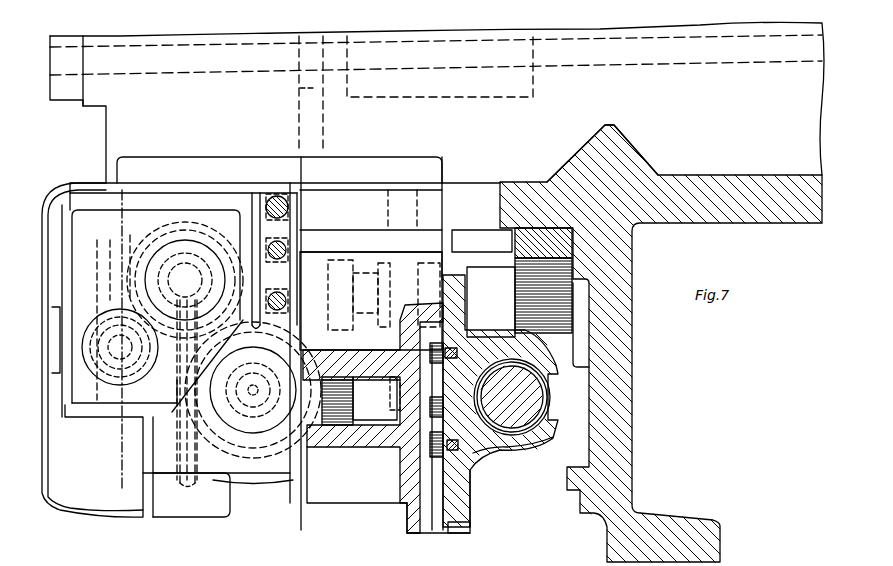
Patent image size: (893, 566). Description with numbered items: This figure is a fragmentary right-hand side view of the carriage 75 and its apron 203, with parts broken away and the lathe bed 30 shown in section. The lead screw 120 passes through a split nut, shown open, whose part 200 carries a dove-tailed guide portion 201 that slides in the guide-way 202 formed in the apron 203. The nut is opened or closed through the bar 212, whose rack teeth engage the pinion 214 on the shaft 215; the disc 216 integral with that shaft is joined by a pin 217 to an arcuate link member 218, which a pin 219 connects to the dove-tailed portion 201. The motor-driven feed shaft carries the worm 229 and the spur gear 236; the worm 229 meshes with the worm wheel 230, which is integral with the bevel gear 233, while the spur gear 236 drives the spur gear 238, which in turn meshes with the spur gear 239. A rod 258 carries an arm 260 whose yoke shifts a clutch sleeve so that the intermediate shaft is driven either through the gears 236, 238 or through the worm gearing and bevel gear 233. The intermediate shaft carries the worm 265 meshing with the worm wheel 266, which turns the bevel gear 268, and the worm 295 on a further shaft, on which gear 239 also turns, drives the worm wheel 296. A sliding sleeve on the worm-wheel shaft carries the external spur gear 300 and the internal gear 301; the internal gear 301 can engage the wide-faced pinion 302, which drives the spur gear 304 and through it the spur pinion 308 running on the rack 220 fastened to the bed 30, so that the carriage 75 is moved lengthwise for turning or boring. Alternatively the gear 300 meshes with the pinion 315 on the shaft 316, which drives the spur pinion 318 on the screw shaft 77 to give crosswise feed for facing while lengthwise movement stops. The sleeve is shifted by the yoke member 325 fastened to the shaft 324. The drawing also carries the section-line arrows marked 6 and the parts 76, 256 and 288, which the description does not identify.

The bed 30 is at (635, 481).
The carriage 75 is at (437, 102).
The chamfered projection 76 is at (622, 151).
The screw shaft 77 is at (692, 67).
The lead screw 120 is at (548, 391).
The split nut part 200 is at (473, 340).
The dove-tailed guide portion 201 is at (466, 284).
The slot or guide-way 202 is at (463, 531).
The apron 203 is at (375, 497).
The bar 212 is at (395, 330).
The pinion 214 is at (343, 446).
The shaft 215 is at (373, 434).
The disc 216 is at (397, 388).
The pin 217 is at (441, 412).
The arcuate link member 218 is at (433, 342).
The pin 219 is at (452, 352).
The rack 220 is at (513, 240).
The worm 229 is at (116, 354).
The worm wheel 230 is at (169, 350).
The bevel gear 233 is at (140, 243).
The spur gear 236 is at (177, 380).
The spur gear 238 is at (197, 390).
The spur gear 239 is at (268, 462).
The plate 256 is at (300, 252).
The rod 258 is at (277, 275).
The arm 260 is at (197, 233).
The worm 265 is at (185, 280).
The worm wheel 266 is at (183, 493).
The bevel gear 268 is at (213, 467).
The block 288 is at (310, 303).
The worm 295 is at (258, 401).
The worm wheel 296 is at (258, 203).
The external spur gear 300 is at (320, 225).
The internal gear 301 is at (365, 247).
The wide-faced spur pinion 302 is at (387, 268).
The spur gear 304 is at (417, 215).
The spur pinion 308 is at (560, 312).
The pinion 315 is at (326, 127).
The shaft 316 is at (350, 148).
The spur pinion 318 is at (300, 68).
The shaft 324 is at (318, 206).
The yoke member 325 is at (332, 223).
The section line 6- 6 is at (78, 198).